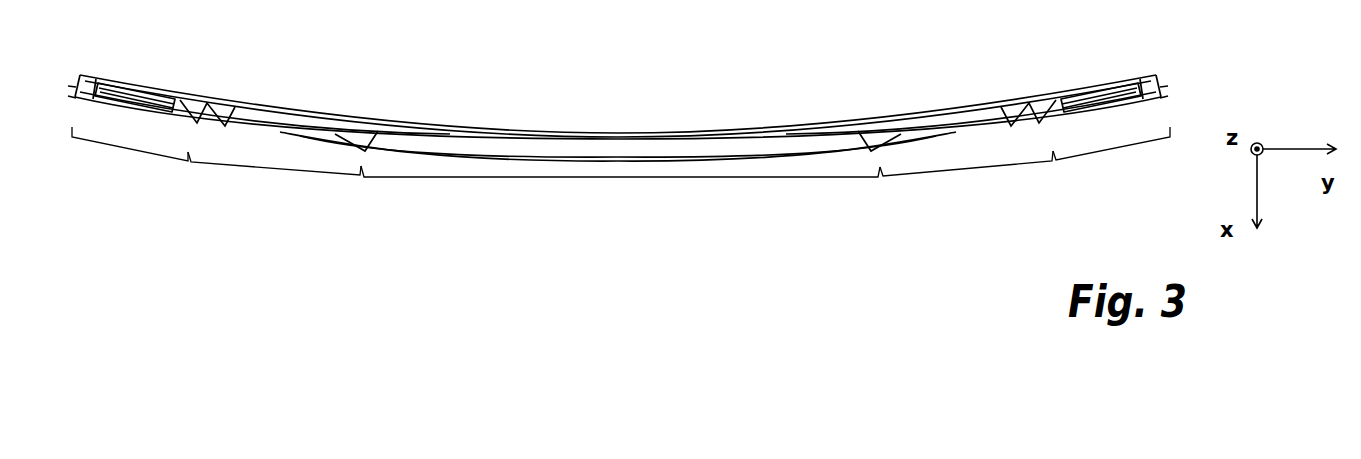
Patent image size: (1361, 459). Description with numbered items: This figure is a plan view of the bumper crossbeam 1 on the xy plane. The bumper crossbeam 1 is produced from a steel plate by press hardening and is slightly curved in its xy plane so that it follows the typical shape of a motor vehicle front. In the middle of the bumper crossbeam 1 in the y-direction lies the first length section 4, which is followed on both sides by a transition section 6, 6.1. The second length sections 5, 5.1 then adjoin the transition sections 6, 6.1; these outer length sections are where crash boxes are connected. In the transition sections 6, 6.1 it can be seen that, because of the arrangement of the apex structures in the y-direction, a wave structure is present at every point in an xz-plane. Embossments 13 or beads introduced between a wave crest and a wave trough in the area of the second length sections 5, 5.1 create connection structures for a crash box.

The bumper crossbeam 1 is at (618, 100).
The embossment 13 is at (142, 96).
The first length section 4 is at (622, 178).
The second length section 5 is at (1115, 150).
The second length section 5.1 is at (127, 150).
The transition section 6 is at (967, 172).
The transition section 6.1 is at (275, 168).